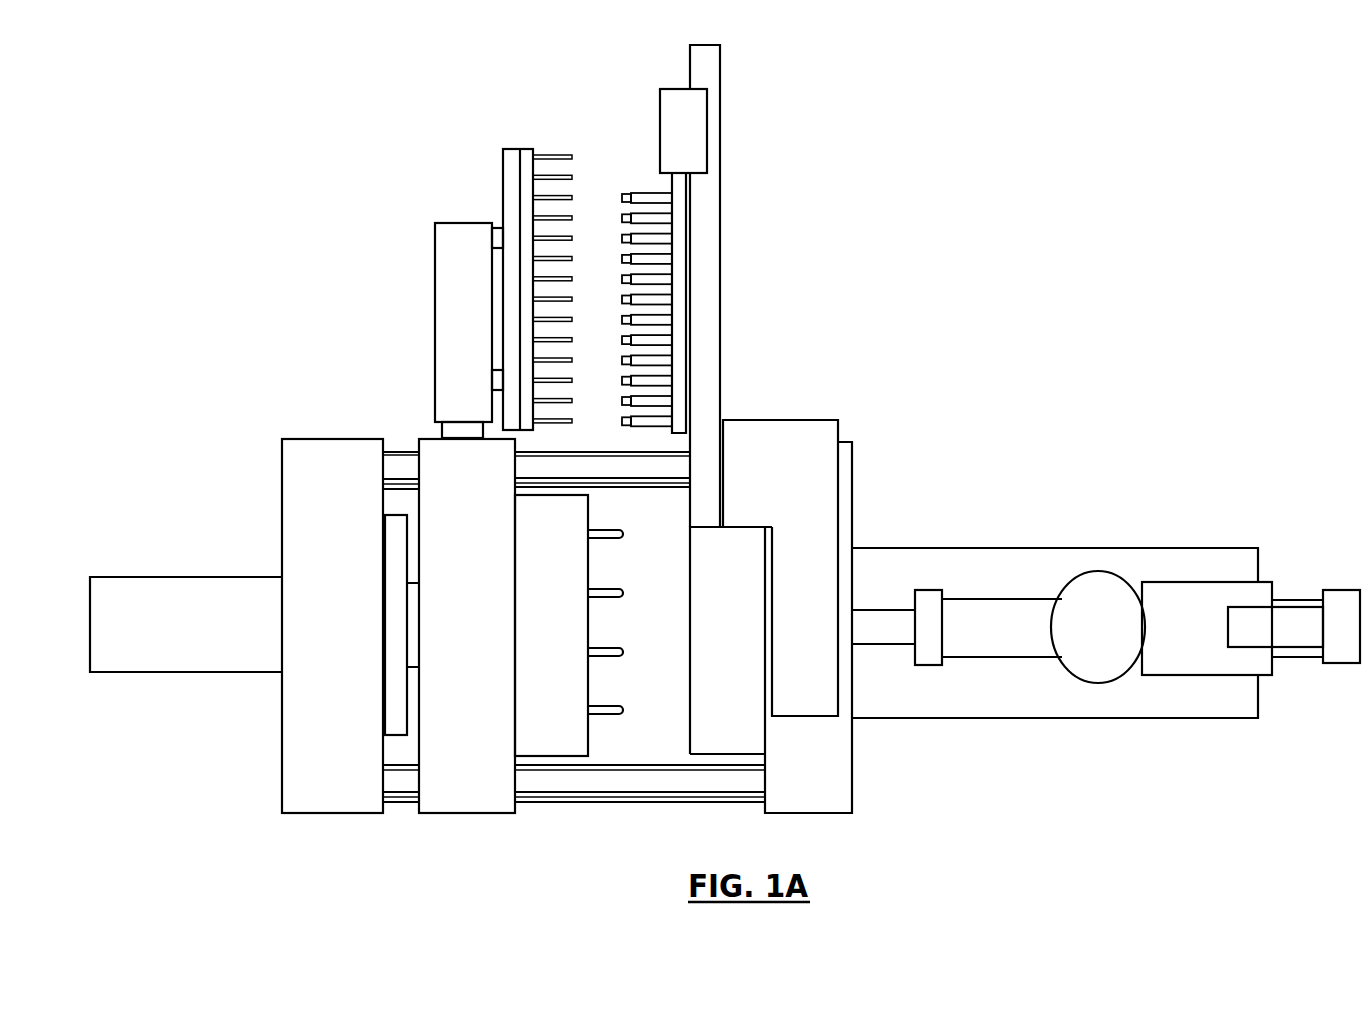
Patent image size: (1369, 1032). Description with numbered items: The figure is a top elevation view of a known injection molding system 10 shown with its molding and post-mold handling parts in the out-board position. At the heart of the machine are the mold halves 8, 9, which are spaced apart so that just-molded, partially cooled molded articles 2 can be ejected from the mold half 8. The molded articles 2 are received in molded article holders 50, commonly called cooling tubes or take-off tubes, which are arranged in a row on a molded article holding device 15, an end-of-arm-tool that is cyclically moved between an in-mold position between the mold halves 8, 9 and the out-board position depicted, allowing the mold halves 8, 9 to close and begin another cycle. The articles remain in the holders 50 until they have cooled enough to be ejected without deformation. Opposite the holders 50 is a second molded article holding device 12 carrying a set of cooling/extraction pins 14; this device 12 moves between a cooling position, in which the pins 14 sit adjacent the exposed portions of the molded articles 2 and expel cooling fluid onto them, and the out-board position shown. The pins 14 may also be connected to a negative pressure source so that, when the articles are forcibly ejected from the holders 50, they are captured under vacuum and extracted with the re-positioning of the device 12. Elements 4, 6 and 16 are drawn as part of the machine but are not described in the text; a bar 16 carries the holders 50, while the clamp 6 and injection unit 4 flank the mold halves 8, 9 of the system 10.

The molded articles 2 is at (627, 194).
The injection unit 4 is at (1007, 528).
The clamp unit 6 is at (258, 732).
The mold half 8 is at (533, 646).
The mold half 9 is at (719, 643).
The injection molding system 10 is at (797, 360).
The molded article holding device 12 is at (473, 192).
The cooling/extraction pins 14 is at (538, 198).
The molded article holding device 15 is at (758, 218).
The treatment pin bar 16 is at (680, 268).
The molded article holders 50 is at (658, 200).